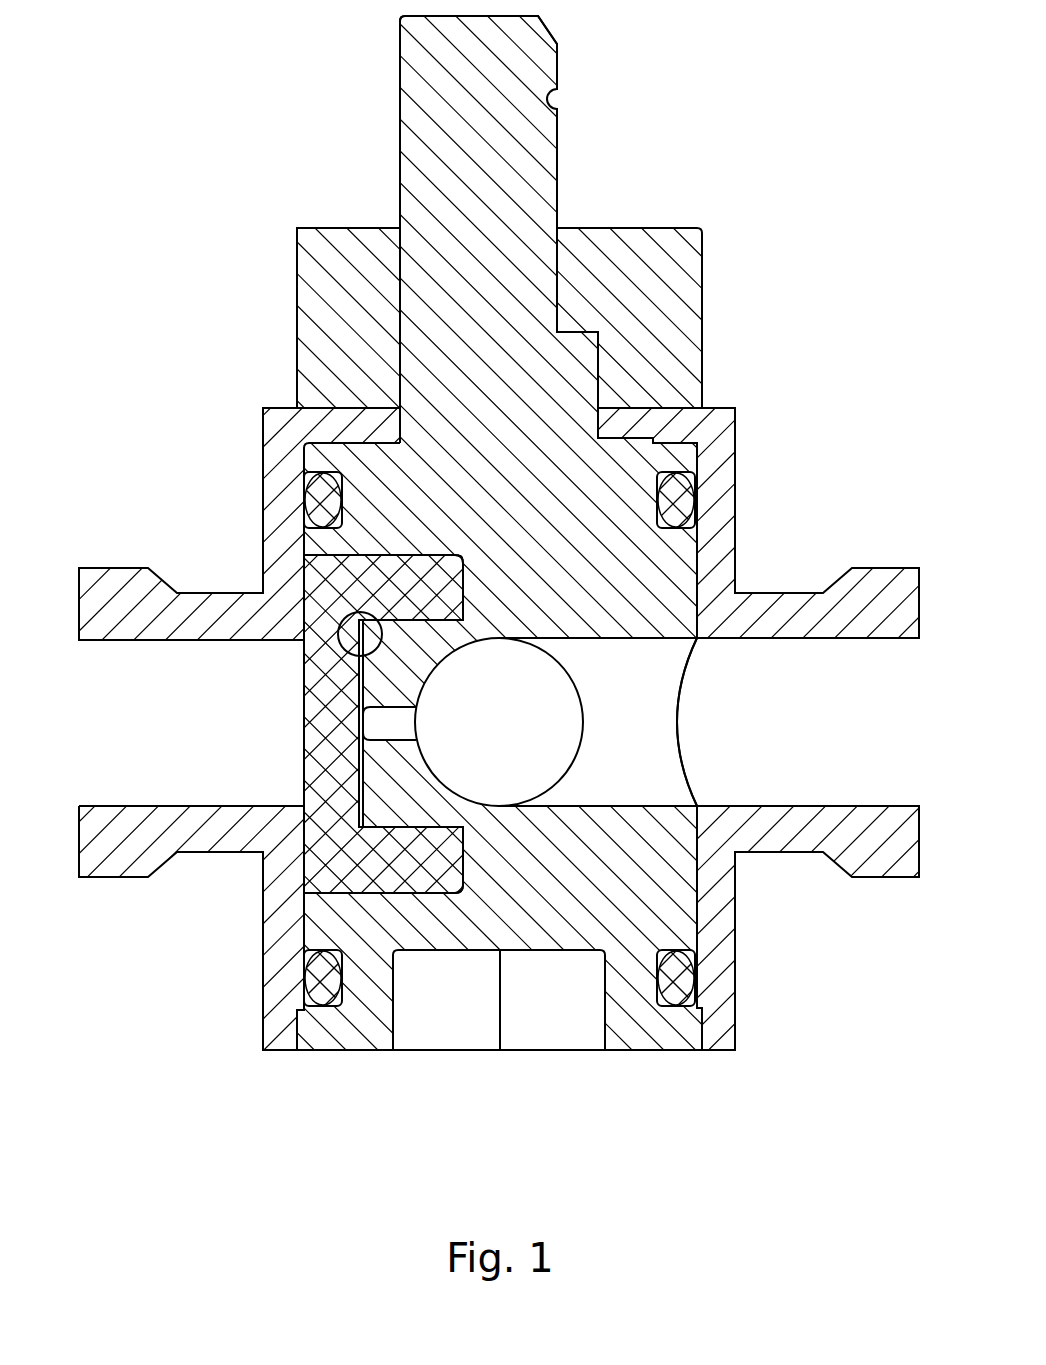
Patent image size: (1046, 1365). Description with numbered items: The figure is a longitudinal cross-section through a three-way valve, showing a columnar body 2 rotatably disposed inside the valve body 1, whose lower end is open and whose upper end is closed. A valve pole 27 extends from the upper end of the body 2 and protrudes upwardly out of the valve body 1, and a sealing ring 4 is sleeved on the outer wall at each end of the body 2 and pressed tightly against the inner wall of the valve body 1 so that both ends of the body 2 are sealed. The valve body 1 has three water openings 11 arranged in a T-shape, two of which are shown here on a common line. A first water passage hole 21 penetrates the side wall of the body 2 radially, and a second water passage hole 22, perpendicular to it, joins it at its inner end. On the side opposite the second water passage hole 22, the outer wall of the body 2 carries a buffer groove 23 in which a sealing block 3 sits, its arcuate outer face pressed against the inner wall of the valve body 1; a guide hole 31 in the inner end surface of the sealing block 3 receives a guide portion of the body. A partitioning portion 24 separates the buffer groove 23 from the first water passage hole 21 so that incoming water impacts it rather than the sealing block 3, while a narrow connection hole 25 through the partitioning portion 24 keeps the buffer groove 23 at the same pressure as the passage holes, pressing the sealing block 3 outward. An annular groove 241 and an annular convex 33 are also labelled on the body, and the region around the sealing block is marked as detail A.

The valve body 1 is at (752, 832).
The water opening 11 is at (160, 720).
The body 2 is at (543, 523).
The first water passage hole 21 is at (500, 724).
The second water passage hole 22 is at (633, 727).
The buffer groove 23 is at (377, 893).
The partitioning portion 24 is at (417, 777).
The annular groove 241 is at (458, 558).
The connection hole 25 is at (390, 717).
The valve pole 27 is at (495, 180).
The sealing block 3 is at (330, 703).
The guide hole 31 is at (412, 618).
The annular convex 33 is at (434, 585).
The sealing ring 4 is at (680, 500).
The detail region A is at (347, 612).